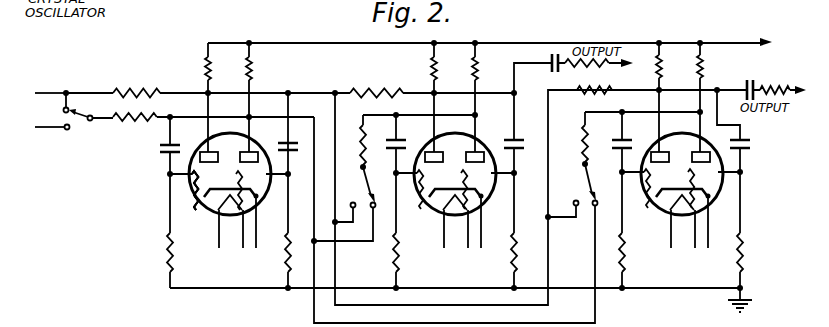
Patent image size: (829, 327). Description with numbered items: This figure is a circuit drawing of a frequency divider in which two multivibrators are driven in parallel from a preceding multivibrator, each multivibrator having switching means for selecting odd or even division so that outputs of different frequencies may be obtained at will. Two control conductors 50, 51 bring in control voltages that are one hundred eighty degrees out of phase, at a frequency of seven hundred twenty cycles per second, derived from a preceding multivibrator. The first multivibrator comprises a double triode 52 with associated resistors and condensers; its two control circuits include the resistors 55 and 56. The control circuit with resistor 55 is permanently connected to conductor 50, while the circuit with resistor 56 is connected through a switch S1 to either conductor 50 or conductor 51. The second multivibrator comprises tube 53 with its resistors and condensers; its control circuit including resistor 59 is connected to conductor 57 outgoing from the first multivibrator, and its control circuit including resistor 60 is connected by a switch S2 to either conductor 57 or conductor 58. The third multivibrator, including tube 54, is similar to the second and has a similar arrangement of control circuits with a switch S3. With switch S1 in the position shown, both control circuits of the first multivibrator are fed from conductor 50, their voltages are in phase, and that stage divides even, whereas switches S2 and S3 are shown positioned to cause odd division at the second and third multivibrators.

The control conductor 50 is at (47, 92).
The control conductor 51 is at (40, 130).
The double triode 52 is at (191, 192).
The tube 53 is at (440, 206).
The tube 54 is at (658, 206).
The resistor 55 is at (124, 91).
The resistor 56 is at (132, 123).
The conductor 57 is at (292, 92).
The conductor 58 is at (301, 114).
The resistor 59 is at (378, 90).
The resistor 60 is at (364, 150).
The switch S1 is at (79, 120).
The switch S2 is at (345, 202).
The switch S3 is at (573, 164).